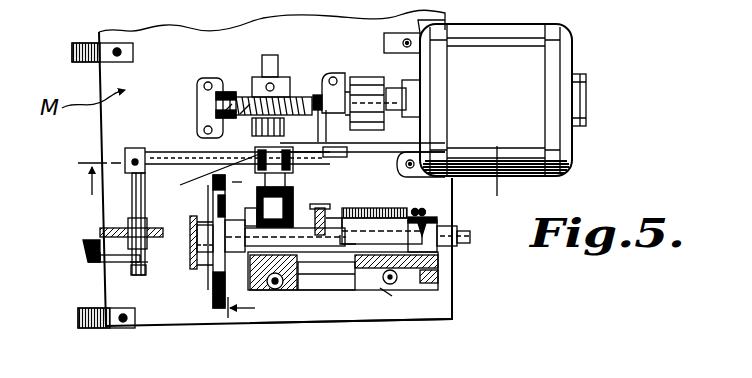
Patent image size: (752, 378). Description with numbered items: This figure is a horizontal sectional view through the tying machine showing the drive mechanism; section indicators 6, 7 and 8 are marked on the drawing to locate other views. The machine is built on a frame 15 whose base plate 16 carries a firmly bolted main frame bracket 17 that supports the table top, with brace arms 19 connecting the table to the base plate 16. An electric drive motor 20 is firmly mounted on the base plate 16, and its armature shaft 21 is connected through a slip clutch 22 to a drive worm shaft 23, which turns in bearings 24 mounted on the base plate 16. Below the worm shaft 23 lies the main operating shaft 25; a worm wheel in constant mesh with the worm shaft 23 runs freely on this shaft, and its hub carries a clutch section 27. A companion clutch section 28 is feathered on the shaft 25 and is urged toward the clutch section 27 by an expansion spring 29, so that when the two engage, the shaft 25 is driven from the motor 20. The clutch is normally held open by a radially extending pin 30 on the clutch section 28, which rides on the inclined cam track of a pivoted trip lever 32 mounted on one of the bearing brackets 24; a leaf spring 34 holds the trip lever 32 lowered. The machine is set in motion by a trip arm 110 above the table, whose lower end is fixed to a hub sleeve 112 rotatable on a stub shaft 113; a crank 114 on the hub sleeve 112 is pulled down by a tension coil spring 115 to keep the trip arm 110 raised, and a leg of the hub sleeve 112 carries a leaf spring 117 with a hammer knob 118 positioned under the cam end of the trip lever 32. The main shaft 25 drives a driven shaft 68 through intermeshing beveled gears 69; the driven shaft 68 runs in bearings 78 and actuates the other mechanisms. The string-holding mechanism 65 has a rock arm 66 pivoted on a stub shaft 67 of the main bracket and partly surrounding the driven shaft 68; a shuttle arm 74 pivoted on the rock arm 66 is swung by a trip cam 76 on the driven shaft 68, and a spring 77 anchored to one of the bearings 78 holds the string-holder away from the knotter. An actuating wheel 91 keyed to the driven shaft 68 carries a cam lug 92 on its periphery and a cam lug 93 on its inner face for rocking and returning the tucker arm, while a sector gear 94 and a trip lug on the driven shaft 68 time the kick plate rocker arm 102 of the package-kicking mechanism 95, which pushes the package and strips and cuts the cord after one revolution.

The section line 6- 6 is at (289, 160).
The bearing bracket 7 is at (335, 76).
The section line 8 is at (248, 246).
The frame 15 is at (432, 308).
The base plate 16 is at (323, 320).
The main frame bracket 17 is at (392, 296).
The brace arms 19 is at (78, 320).
The electric drive motor 20 is at (503, 100).
The armature shaft 21 is at (392, 100).
The slip clutch 22 is at (375, 77).
The drive worm shaft 23 is at (247, 92).
The bearings 24 is at (198, 100).
The main operating shaft 25 is at (284, 58).
The clutch section 27 is at (231, 128).
The companion clutch section 28 is at (216, 176).
The expansion spring 29 is at (292, 170).
The radially extending pin 30 is at (365, 132).
The trip lever 32 is at (318, 110).
The leaf spring 34 is at (362, 152).
The string-holding mechanism 65 is at (333, 208).
The rock arm 66 is at (322, 206).
The stub shaft 67 is at (336, 290).
The driven shaft 68 is at (470, 236).
The beveled gears 69 is at (280, 296).
The shuttle arm 74 is at (310, 280).
The trip cam 76 is at (338, 222).
The spring 77 is at (366, 210).
The bearings 78 is at (436, 216).
The actuating wheel 91 is at (214, 302).
The cam lug 92 is at (212, 282).
The cam lug 93 is at (257, 200).
The sector gear 94 is at (257, 216).
The package-kicking mechanism 95 is at (192, 218).
The kick plate rocker arm 102 is at (196, 282).
The trip arm 110 is at (148, 238).
The hub sleeve 112 is at (132, 200).
The stub shaft 113 is at (140, 266).
The crank 114 is at (104, 262).
The tension coil spring 115 is at (84, 247).
The leaf spring 117 is at (178, 158).
The hammer knob 118 is at (141, 262).